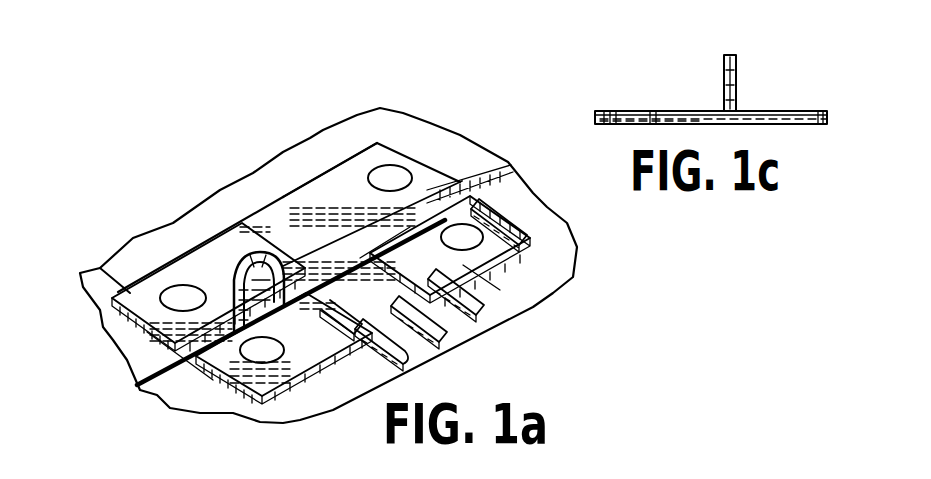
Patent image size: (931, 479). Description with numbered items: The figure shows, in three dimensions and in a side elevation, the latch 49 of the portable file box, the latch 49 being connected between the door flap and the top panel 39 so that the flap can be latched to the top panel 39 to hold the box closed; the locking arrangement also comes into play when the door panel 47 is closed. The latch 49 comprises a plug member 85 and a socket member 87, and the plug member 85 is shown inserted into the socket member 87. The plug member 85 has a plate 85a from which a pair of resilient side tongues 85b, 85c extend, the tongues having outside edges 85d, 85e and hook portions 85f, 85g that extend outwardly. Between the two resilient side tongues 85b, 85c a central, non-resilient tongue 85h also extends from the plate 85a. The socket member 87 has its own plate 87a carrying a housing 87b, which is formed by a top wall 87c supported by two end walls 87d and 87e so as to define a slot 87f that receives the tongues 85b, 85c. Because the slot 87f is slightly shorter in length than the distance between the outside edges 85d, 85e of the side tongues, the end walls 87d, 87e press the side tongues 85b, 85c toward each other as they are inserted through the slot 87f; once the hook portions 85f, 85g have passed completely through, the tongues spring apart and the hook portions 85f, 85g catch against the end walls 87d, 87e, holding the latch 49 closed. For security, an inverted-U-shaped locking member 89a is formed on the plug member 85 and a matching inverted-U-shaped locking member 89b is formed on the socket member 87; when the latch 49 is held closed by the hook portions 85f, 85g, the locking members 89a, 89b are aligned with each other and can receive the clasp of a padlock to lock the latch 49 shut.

In FIG. 1A, the top panel 39 is at (157, 388).
In FIG. 1A, the door panel 47 is at (167, 240).
In FIG. 1A, the latch 49 is at (293, 198).
In FIG. 1A, the plug member 85 is at (100, 268).
In FIG. 1A, the plate 85a is at (377, 152).
In FIG. 1C, the plate 85a is at (630, 111).
In FIG. 1A, the resilient side tongue 85b is at (440, 348).
In FIG. 1C, the resilient side tongue 85b is at (820, 111).
In FIG. 1A, the resilient side tongue 85c is at (470, 305).
In FIG. 1A, the outside edge 85d is at (368, 360).
In FIG. 1A, the outside edge 85e is at (573, 309).
In FIG. 1A, the hook portion 85f is at (340, 345).
In FIG. 1A, the hook portion 85g is at (485, 327).
In FIG. 1A, the central non-resilient tongue 85h is at (455, 350).
In FIG. 1A, the socket member 87 is at (185, 362).
In FIG. 1A, the plate 87a is at (503, 227).
In FIG. 1A, the housing 87b is at (410, 227).
In FIG. 1A, the top wall 87c is at (342, 248).
In FIG. 1A, the end wall 87d is at (348, 312).
In FIG. 1A, the end wall 87e is at (482, 273).
In FIG. 1A, the slot 87f is at (358, 300).
In FIG. 1A, the inverted-U-shaped locking member 89a is at (244, 280).
In FIG. 1C, the inverted-U-shaped locking member 89a is at (727, 55).
In FIG. 1A, the inverted-U-shaped locking member 89b is at (187, 357).